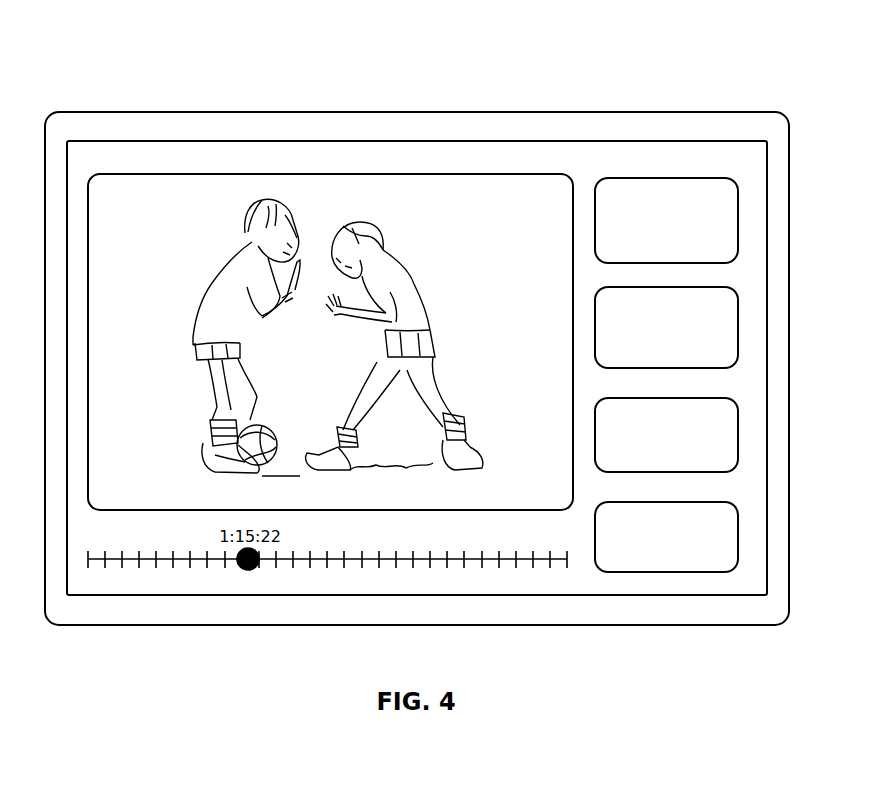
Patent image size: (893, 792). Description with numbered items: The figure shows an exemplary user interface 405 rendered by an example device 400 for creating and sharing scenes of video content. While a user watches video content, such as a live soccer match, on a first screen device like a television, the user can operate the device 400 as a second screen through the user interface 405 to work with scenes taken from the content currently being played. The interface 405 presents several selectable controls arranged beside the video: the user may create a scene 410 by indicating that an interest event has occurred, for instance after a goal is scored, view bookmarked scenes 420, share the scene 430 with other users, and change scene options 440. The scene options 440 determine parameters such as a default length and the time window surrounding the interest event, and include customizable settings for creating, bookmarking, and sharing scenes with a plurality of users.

The device 400 is at (77, 108).
The user interface 405 is at (130, 137).
The create scene option 410 is at (650, 240).
The bookmarked scenes option 420 is at (718, 350).
The share scene option 430 is at (650, 456).
The scene options 440 is at (720, 556).